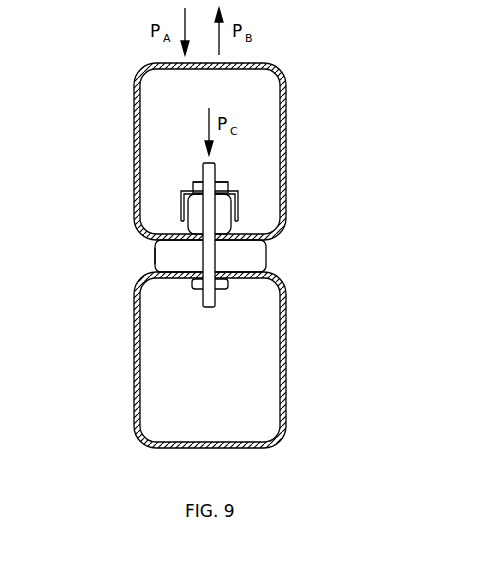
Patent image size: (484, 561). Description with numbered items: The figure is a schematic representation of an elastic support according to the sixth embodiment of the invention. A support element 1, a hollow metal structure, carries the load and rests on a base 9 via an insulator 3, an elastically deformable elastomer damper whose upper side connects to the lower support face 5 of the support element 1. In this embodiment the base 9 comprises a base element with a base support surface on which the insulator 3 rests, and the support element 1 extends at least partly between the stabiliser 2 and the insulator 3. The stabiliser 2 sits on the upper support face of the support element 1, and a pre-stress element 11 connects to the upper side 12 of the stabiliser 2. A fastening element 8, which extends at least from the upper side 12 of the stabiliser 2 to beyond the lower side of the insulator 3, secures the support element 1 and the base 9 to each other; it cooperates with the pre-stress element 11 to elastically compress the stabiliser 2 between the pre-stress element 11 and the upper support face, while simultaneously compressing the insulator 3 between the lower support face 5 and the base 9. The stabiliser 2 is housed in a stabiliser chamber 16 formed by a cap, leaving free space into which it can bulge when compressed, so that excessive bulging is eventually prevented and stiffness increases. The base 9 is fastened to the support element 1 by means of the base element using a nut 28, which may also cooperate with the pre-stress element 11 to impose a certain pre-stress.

The support element 1 is at (283, 128).
The stabiliser 2 is at (222, 214).
The insulator 3 is at (253, 253).
The lower support face 5 is at (157, 243).
The fastening element 8 is at (210, 302).
The base 9 is at (142, 385).
The pre-stress element 11 is at (228, 183).
The upper side of the stabiliser 12 is at (195, 182).
The stabiliser chamber 16 is at (183, 198).
The nut 28 is at (227, 283).